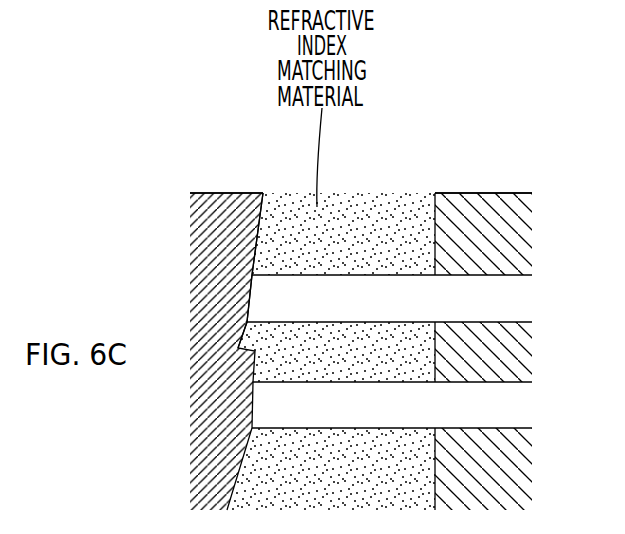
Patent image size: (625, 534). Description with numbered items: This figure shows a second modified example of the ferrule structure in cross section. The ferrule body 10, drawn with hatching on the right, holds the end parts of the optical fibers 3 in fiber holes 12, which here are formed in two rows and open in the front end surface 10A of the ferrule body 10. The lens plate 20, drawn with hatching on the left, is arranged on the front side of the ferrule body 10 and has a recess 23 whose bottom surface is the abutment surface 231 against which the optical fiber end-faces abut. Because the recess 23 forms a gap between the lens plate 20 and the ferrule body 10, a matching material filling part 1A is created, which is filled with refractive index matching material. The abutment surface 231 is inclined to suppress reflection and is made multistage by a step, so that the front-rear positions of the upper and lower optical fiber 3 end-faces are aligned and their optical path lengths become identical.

The matching material filling part 1A is at (364, 152).
The optical fiber 3 is at (348, 405).
The ferrule body 10 is at (522, 199).
The front end surface 10A is at (432, 217).
The fiber hole 12 is at (468, 382).
The lens plate 20 is at (206, 192).
The recess 23 is at (246, 309).
The abutment surface 231 is at (268, 195).